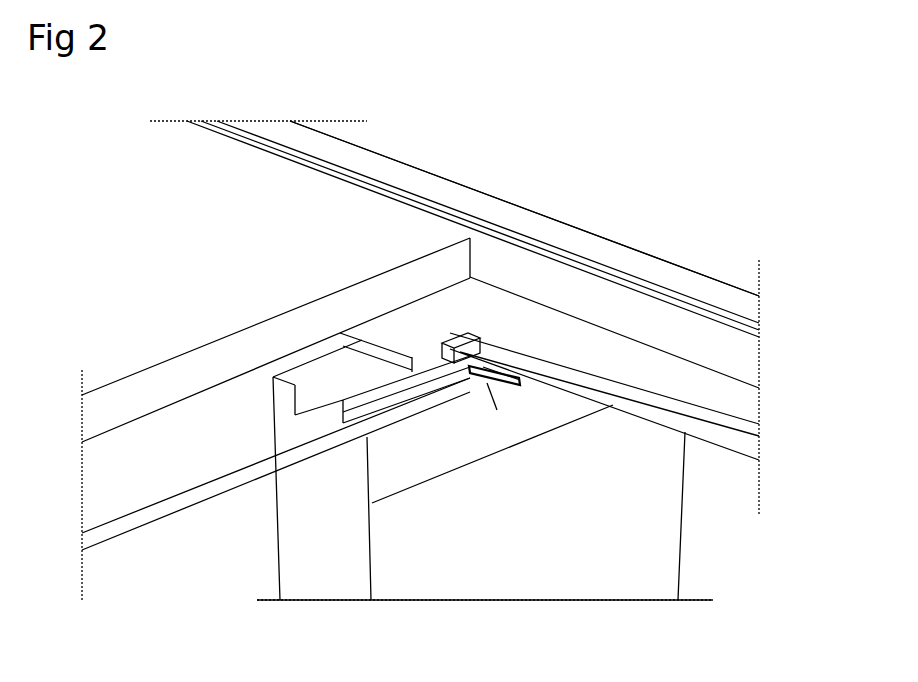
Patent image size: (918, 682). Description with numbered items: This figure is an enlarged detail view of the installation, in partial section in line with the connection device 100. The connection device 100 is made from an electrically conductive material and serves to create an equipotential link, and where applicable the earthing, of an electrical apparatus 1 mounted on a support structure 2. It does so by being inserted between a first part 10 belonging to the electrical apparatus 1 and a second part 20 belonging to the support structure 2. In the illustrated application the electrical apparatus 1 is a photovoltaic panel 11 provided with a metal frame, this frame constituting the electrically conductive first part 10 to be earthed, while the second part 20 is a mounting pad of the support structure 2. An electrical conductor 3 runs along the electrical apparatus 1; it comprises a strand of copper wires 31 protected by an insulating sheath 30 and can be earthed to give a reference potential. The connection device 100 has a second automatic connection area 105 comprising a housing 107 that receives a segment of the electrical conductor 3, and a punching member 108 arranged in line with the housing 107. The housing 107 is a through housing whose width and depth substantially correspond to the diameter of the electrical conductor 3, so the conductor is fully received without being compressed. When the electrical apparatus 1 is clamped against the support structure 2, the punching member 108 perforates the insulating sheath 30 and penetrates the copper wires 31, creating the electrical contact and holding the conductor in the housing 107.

The electrical apparatus 1 is at (207, 155).
The support structure 2 is at (472, 575).
The electrical conductor 3 is at (190, 522).
The first part 10 is at (372, 340).
The photovoltaic panel 11 is at (198, 225).
The second part 20 is at (538, 555).
The insulating sheath 30 is at (320, 447).
The strand of copper wires 31 is at (704, 277).
The connection device 100 is at (452, 352).
The second automatic connection area 105 is at (512, 398).
The housing 107 is at (490, 405).
The punching member 108 is at (483, 367).